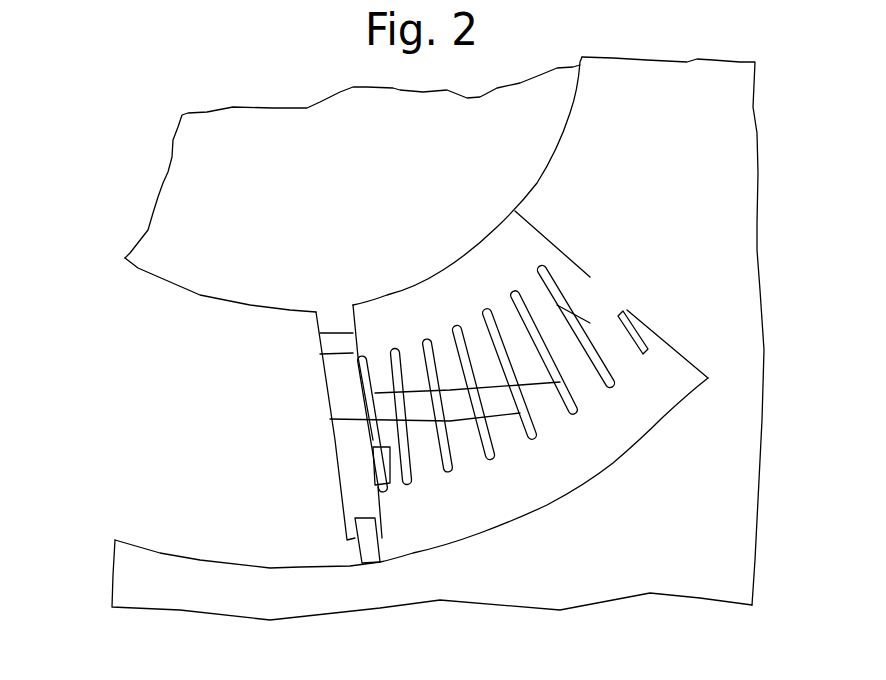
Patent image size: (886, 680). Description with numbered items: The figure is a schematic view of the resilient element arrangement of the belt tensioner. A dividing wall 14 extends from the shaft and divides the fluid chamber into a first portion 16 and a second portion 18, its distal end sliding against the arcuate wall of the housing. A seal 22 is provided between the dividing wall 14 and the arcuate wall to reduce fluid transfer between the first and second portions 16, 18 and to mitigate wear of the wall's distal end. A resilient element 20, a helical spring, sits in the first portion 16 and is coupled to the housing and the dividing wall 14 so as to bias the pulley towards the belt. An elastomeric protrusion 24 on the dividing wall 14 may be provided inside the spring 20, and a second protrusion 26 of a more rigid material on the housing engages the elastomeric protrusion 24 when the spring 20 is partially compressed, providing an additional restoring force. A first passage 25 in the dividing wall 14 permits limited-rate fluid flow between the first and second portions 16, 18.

The dividing wall 14 is at (375, 472).
The first portion 16 is at (627, 413).
The second portion 18 is at (175, 472).
The resilient element 20 is at (535, 437).
The seal 22 is at (362, 548).
The elastomeric protrusion 24 is at (448, 412).
The first passage 25 is at (318, 350).
The second protrusion 26 is at (600, 310).